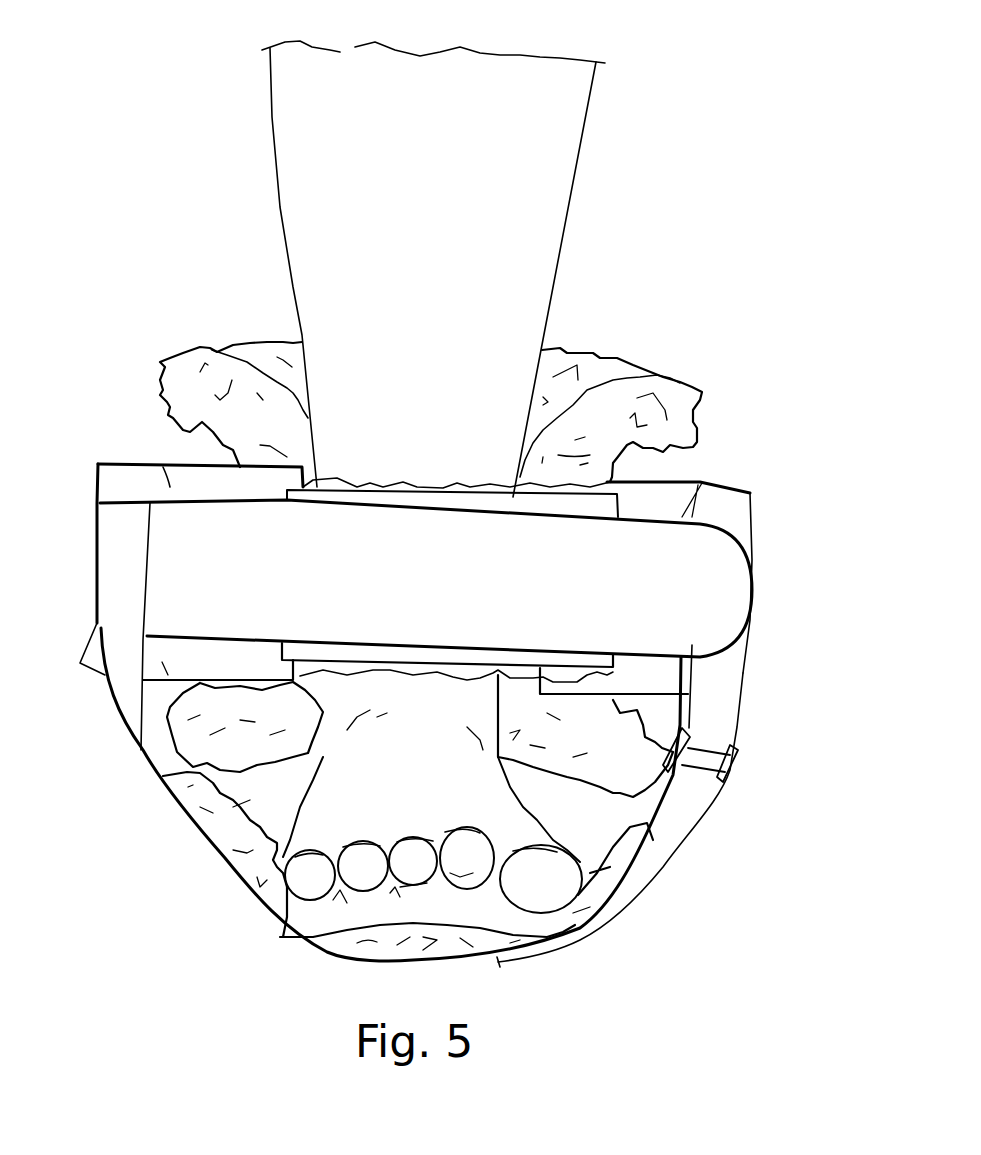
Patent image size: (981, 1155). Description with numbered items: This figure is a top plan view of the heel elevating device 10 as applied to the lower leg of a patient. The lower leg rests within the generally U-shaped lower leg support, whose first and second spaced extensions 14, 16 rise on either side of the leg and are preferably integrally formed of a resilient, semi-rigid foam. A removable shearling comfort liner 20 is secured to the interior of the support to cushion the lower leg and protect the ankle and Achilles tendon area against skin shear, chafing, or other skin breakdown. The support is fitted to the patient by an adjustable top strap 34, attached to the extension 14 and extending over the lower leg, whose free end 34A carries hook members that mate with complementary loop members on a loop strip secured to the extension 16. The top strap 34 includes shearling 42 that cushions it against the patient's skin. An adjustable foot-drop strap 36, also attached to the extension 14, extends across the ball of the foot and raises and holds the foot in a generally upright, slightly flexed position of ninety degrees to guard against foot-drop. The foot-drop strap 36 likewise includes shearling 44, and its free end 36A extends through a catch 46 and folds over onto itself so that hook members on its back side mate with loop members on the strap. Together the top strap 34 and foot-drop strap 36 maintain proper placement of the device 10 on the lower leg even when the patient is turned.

The heel elevating device 10 is at (647, 290).
The first extension 14 is at (167, 663).
The second extension 16 is at (650, 672).
The comfort liner 20 is at (677, 400).
The top strap 34 is at (640, 548).
The free end of the top strap 34A is at (727, 590).
The foot-drop strap 36 is at (120, 716).
The free end of the foot-drop strap 36A is at (513, 967).
The shearling 42 is at (397, 487).
The shearling 44 is at (233, 835).
The catch 46 is at (727, 763).